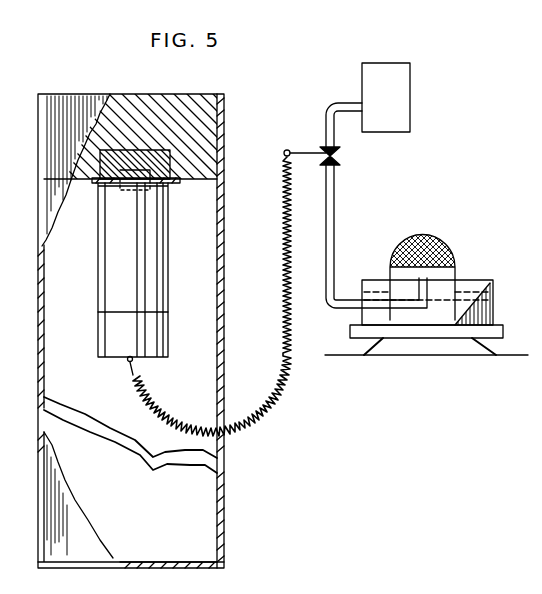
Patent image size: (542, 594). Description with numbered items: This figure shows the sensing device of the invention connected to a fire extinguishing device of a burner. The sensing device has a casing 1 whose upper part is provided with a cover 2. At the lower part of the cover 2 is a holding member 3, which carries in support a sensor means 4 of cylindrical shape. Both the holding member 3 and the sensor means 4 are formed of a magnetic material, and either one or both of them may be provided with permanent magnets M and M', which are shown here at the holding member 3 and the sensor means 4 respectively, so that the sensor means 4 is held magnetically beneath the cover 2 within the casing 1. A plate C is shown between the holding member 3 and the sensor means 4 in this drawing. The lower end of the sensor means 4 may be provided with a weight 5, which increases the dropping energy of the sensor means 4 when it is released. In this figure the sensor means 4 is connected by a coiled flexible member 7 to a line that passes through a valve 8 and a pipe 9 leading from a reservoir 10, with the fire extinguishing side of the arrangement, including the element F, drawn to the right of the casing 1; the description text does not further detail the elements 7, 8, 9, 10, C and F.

The casing 1 is at (40, 275).
The cover 2 is at (224, 133).
The holding member 3 is at (166, 157).
The sensor means 4 is at (165, 240).
The weight 5 is at (165, 323).
The flexible coiled tube 7 is at (281, 314).
The valve 8 is at (337, 158).
The pipe 9 is at (326, 118).
The reservoir 10 is at (410, 77).
The permanent magnet M is at (134, 165).
The permanent magnet M' is at (113, 192).
The plate C is at (173, 184).
The filter bell F is at (440, 246).